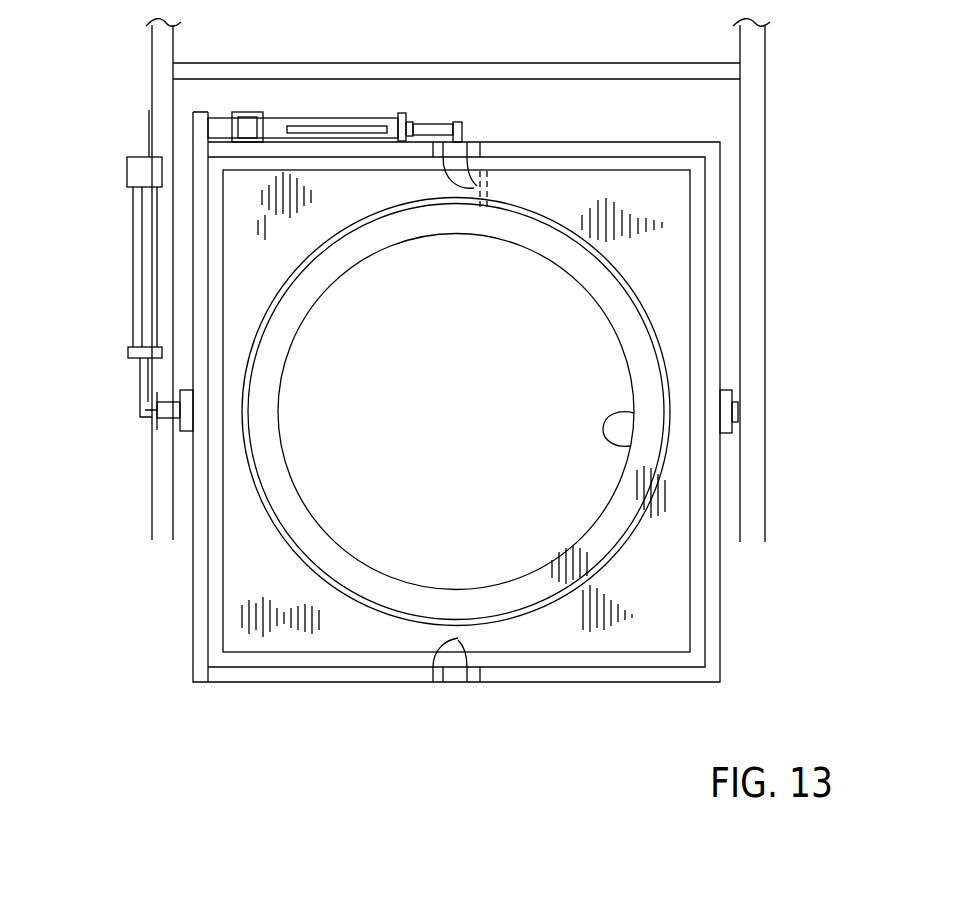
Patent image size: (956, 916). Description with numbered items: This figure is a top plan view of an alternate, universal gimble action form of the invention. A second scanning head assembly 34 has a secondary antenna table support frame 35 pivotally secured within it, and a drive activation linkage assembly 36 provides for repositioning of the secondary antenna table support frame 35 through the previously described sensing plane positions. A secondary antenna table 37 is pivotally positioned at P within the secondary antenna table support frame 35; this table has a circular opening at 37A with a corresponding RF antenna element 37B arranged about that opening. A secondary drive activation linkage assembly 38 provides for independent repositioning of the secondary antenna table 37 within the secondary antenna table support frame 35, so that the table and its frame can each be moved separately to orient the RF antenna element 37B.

The second scanning head assembly 34 is at (743, 593).
The secondary antenna table support frame 35 is at (196, 610).
The drive activation linkage assembly 36 is at (132, 235).
The secondary antenna table 37 is at (662, 632).
The circular opening 37A is at (612, 447).
The RF antenna element 37B is at (650, 313).
The secondary drive activation linkage assembly 38 is at (360, 118).
The pivot P is at (474, 188).